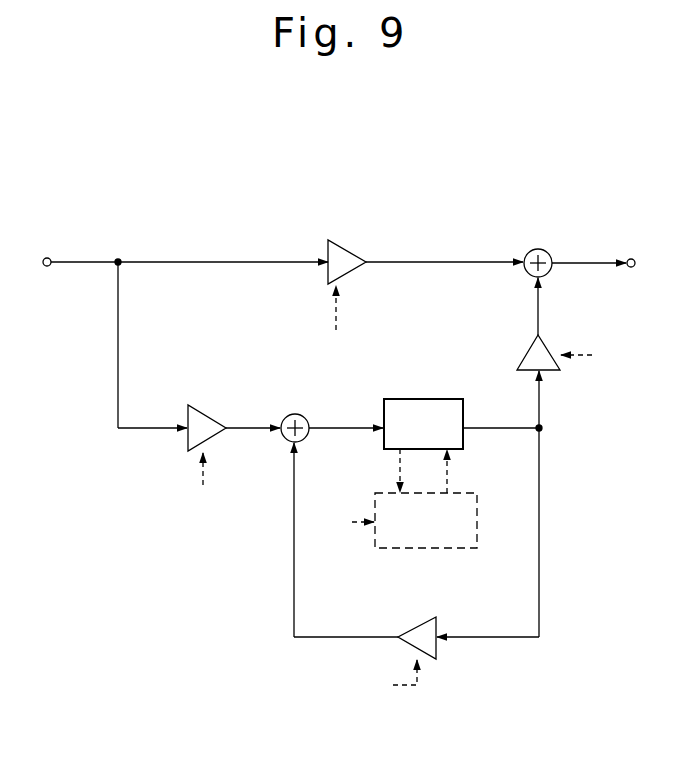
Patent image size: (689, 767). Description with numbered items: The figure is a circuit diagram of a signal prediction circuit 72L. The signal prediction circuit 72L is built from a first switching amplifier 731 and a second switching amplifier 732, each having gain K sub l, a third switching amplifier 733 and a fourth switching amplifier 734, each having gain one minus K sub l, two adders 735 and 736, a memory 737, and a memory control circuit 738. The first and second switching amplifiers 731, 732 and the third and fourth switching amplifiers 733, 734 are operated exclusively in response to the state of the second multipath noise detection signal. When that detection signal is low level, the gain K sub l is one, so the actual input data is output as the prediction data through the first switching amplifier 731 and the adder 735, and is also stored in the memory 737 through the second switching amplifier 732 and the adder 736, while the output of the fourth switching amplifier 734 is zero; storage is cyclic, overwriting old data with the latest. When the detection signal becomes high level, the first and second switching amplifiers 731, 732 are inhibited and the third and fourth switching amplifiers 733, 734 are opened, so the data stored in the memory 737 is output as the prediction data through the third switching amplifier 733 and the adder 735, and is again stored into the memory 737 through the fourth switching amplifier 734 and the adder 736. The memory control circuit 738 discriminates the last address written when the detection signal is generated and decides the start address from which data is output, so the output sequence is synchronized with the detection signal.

The signal prediction circuit 72L is at (364, 200).
The first switching amplifier 731 is at (347, 251).
The second switching amplifier 732 is at (204, 410).
The third switching amplifier 733 is at (526, 352).
The fourth switching amplifier 734 is at (437, 627).
The adder 735 is at (540, 250).
The adder 736 is at (299, 411).
The memory 737 is at (430, 398).
The memory control circuit 738 is at (477, 520).